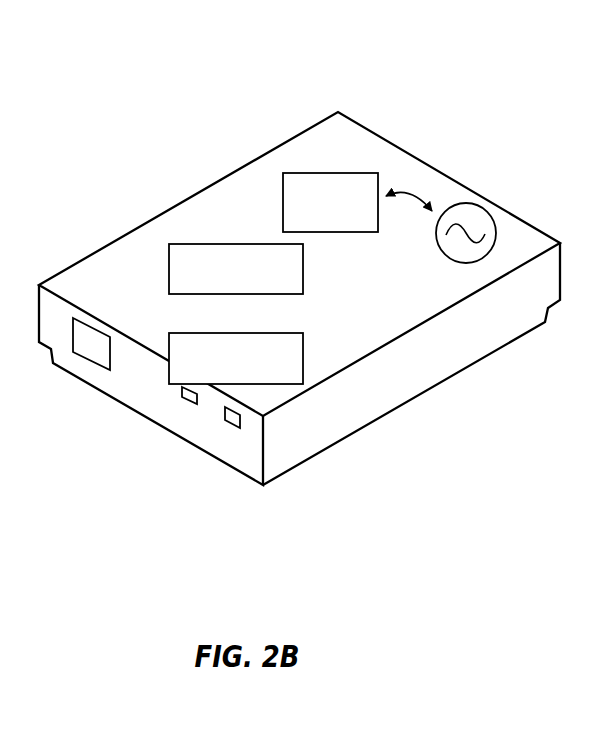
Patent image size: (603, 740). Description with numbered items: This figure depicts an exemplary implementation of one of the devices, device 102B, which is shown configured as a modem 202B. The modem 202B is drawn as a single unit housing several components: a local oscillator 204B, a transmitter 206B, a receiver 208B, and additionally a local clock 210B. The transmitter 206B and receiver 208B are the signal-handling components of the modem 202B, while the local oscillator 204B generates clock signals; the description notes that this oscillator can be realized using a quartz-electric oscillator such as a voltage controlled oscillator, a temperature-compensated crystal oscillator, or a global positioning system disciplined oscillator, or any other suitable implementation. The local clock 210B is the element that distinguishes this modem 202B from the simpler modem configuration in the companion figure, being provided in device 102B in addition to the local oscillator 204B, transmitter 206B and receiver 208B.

The device 102B is at (160, 105).
The modem 202B is at (325, 450).
The local oscillator 204B is at (463, 206).
The transmitter 206B is at (243, 243).
The receiver 208B is at (238, 333).
The local clock 210B is at (302, 173).